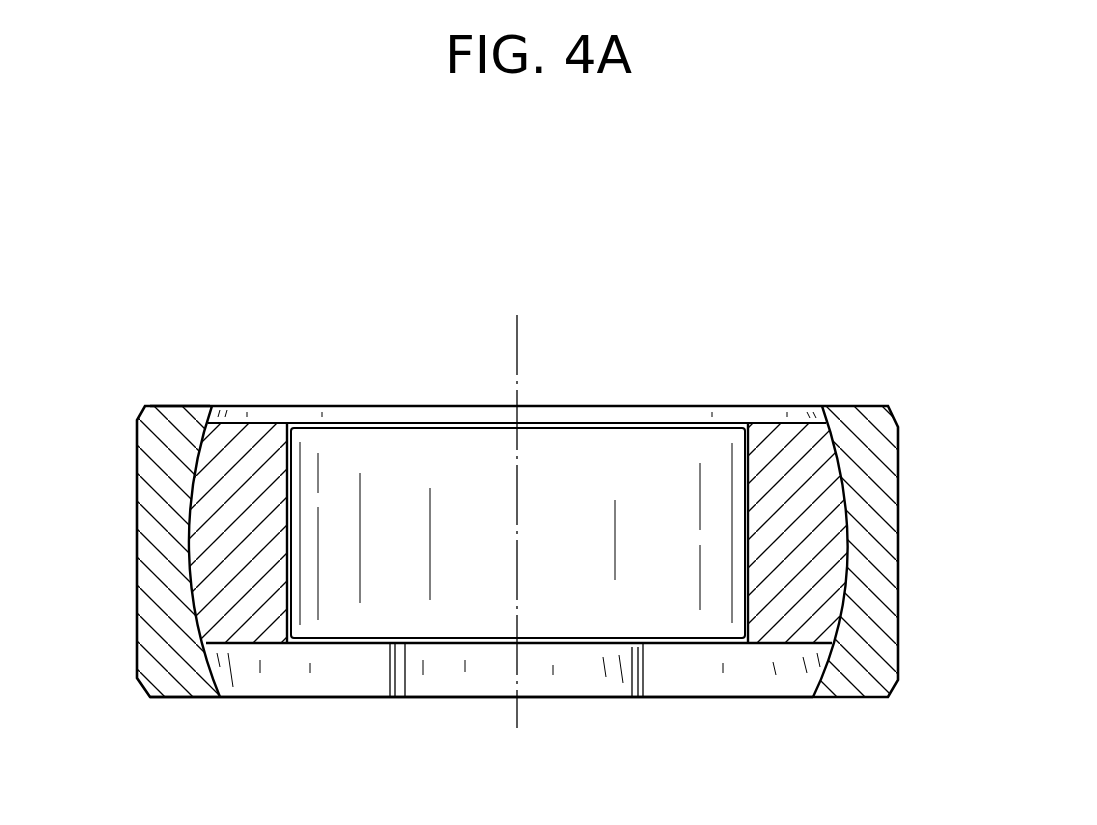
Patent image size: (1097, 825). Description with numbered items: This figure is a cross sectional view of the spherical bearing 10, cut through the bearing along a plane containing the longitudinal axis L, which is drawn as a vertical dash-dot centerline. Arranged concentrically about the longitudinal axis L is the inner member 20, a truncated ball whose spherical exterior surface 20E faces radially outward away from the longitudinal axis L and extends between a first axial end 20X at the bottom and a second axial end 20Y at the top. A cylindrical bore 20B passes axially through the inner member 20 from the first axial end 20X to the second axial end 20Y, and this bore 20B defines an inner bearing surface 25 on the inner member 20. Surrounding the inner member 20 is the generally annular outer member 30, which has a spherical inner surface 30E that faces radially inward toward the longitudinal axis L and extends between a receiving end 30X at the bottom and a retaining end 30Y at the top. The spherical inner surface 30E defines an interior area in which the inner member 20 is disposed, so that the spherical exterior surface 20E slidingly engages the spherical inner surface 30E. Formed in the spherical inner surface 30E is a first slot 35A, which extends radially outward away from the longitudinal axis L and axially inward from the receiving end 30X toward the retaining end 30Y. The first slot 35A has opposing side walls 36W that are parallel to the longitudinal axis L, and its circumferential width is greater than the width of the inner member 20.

The spherical bearing 10 is at (684, 217).
The inner member 20 is at (797, 460).
The bore 20B is at (607, 462).
The spherical exterior surface 20E is at (187, 523).
The first axial end 20X is at (255, 657).
The second axial end 20Y is at (257, 422).
The inner bearing surface 25 is at (747, 520).
The outer member 30 is at (870, 447).
The spherical inner surface 30E is at (353, 667).
The receiving end 30X is at (185, 687).
The retaining end 30Y is at (170, 407).
The first slot 35A is at (477, 676).
The opposing side walls 36W is at (640, 667).
The longitudinal axis L is at (517, 371).